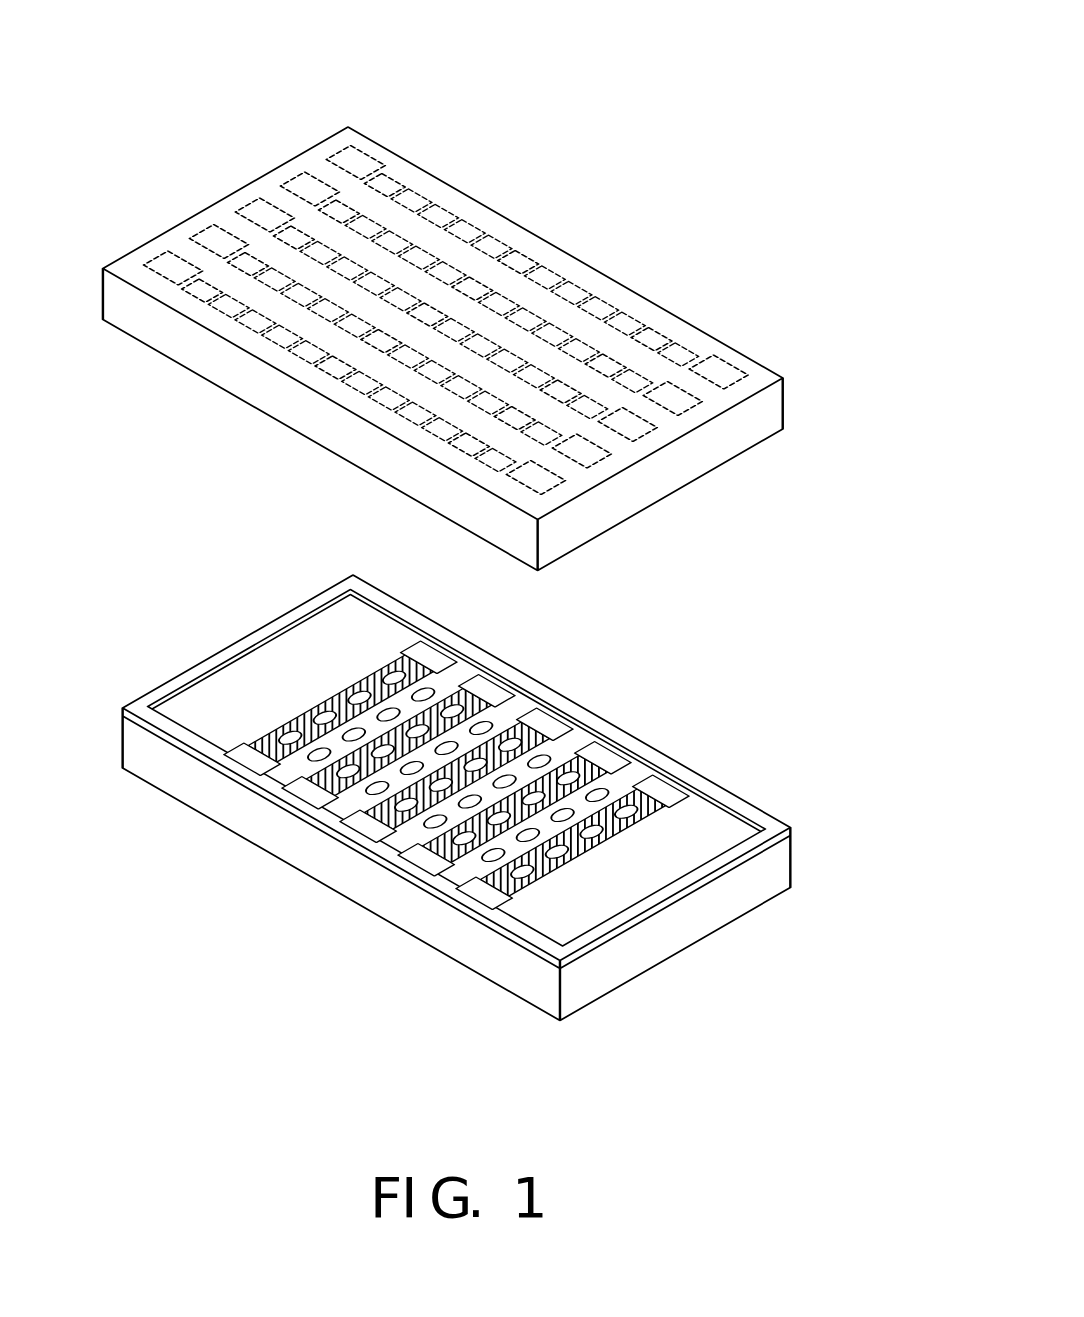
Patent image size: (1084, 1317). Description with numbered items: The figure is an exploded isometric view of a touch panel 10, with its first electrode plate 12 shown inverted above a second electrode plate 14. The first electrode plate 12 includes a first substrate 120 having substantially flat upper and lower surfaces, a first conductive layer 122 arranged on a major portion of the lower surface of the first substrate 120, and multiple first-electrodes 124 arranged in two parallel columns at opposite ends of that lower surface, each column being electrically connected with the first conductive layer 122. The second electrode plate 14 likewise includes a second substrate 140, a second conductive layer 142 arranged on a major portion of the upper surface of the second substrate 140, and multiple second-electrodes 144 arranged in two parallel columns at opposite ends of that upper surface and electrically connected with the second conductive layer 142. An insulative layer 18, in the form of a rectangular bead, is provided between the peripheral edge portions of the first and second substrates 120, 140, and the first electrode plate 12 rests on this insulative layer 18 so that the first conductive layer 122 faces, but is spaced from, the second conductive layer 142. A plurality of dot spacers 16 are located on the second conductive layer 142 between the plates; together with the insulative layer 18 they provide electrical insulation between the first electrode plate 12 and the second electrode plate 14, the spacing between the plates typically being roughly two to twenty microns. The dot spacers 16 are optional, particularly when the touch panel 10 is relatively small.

The touch panel 10 is at (461, 53).
The first electrode plate 12 is at (687, 293).
The first substrate 120 is at (766, 408).
The first conductive layer 122 is at (468, 255).
The first-electrodes 124 is at (272, 210).
The second electrode plate 14 is at (660, 990).
The second substrate 140 is at (415, 912).
The second conductive layer 142 is at (322, 705).
The second-electrodes 144 is at (483, 700).
The dot spacers 16 is at (628, 803).
The insulative layer 18 is at (322, 814).